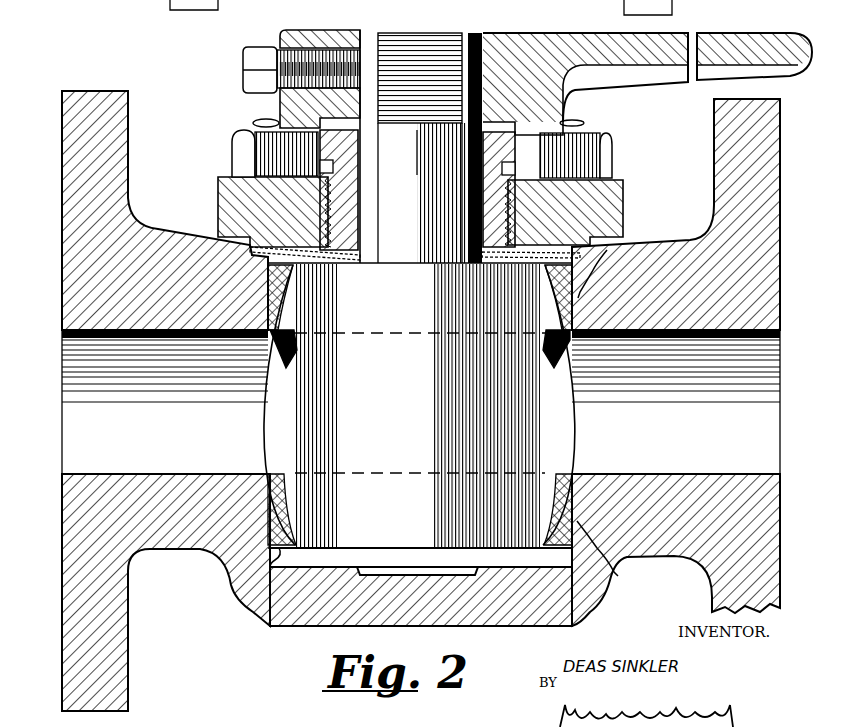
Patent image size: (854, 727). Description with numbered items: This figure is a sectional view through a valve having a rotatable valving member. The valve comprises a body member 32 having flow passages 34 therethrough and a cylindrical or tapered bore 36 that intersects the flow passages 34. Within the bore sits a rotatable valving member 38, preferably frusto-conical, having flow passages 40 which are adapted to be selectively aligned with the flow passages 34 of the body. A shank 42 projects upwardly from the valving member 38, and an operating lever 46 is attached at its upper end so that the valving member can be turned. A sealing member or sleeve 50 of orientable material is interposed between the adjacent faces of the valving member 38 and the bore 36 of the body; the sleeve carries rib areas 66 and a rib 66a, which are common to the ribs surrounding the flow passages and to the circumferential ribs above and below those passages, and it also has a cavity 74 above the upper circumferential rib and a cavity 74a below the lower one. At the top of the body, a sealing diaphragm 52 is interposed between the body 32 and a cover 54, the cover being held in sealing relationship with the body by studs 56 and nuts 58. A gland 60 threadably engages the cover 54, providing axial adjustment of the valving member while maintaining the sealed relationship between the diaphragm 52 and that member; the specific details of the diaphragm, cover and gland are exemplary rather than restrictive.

The body member 32 is at (182, 242).
The flow passages 34 is at (62, 420).
The bore 36 is at (277, 564).
The rotatable valving member 38 is at (353, 424).
The flow passages 40 is at (397, 472).
The shank 42 is at (373, 33).
The operating lever 46 is at (710, 32).
The sealing member or sleeve 50 is at (549, 436).
The sealing diaphragm 52 is at (294, 262).
The cover 54 is at (217, 174).
The studs 56 is at (268, 114).
The nuts 58 is at (238, 142).
The gland 60 is at (350, 188).
The rib areas 66 is at (276, 317).
The rib 66a is at (290, 476).
The cavity 74 is at (627, 247).
The cavity 74a is at (619, 572).